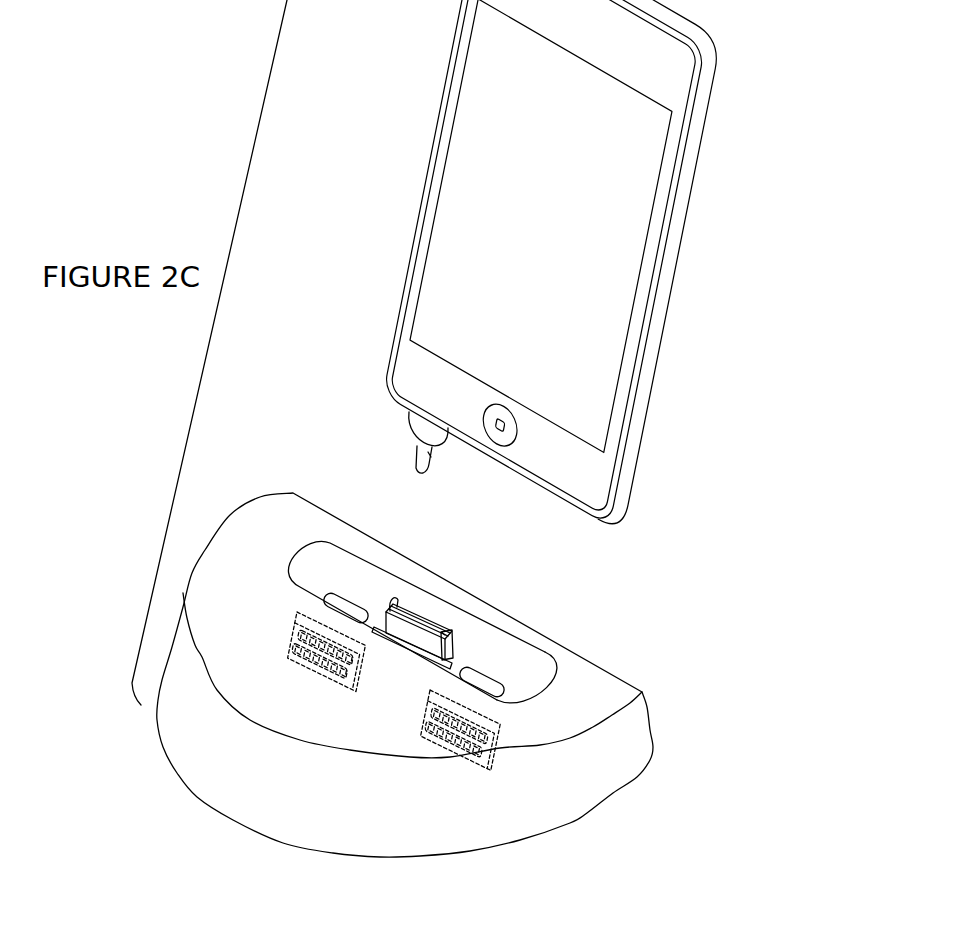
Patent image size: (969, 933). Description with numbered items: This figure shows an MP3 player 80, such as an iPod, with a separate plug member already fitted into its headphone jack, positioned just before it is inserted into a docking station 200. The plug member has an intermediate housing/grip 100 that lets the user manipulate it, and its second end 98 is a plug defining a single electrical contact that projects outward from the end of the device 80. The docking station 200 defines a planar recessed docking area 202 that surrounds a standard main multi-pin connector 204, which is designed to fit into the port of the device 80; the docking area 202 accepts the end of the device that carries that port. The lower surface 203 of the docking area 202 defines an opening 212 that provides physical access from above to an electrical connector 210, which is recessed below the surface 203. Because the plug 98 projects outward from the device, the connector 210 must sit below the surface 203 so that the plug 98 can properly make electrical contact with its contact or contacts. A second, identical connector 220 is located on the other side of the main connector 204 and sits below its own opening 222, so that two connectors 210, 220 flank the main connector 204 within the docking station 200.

The MP3 player 80 is at (655, 337).
The second end 98 is at (431, 453).
The intermediate housing/grip 100 is at (412, 423).
The docking station 200 is at (608, 758).
The planar recessed docking area 202 is at (463, 634).
The lower surface 203 is at (515, 687).
The main multi-pin connector 204 is at (418, 612).
The electrical connector 210 is at (300, 668).
The opening 212 is at (345, 607).
The second connector 220 is at (470, 765).
The opening 222 is at (490, 687).